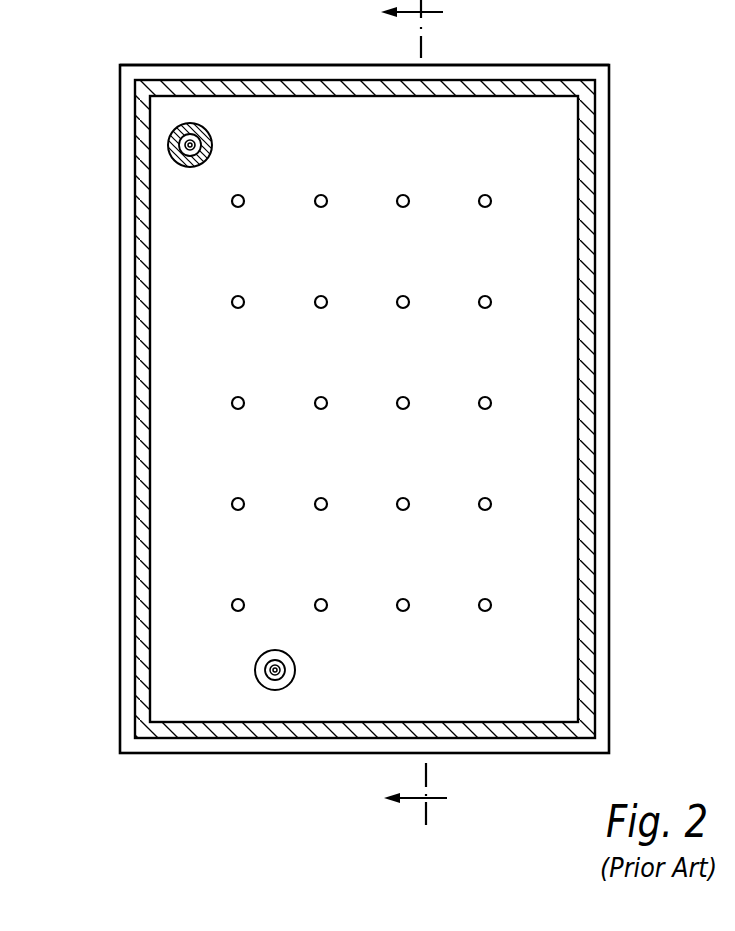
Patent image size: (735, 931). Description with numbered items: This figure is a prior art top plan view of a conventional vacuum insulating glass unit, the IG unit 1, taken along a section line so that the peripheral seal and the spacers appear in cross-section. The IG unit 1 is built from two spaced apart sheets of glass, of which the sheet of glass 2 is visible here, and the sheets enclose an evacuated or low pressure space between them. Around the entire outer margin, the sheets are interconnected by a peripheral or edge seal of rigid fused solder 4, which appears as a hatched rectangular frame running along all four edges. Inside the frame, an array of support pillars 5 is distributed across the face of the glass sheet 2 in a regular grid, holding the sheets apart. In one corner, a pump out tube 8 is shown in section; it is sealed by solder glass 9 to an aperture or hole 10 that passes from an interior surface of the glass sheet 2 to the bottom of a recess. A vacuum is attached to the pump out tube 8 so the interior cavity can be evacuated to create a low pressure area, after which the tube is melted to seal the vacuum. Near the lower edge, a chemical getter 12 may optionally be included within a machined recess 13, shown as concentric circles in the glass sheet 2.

The IG unit 1 is at (109, 621).
The sheet of glass 2 is at (328, 73).
The peripheral or edge seal of rigid fused solder 4 is at (227, 87).
The support pillars 5 is at (497, 300).
The pump out tube 8 is at (188, 145).
The solder glass 9 is at (196, 172).
The aperture or hole 10 is at (178, 158).
The chemical getter 12 is at (271, 680).
The machined recess 13 is at (291, 670).